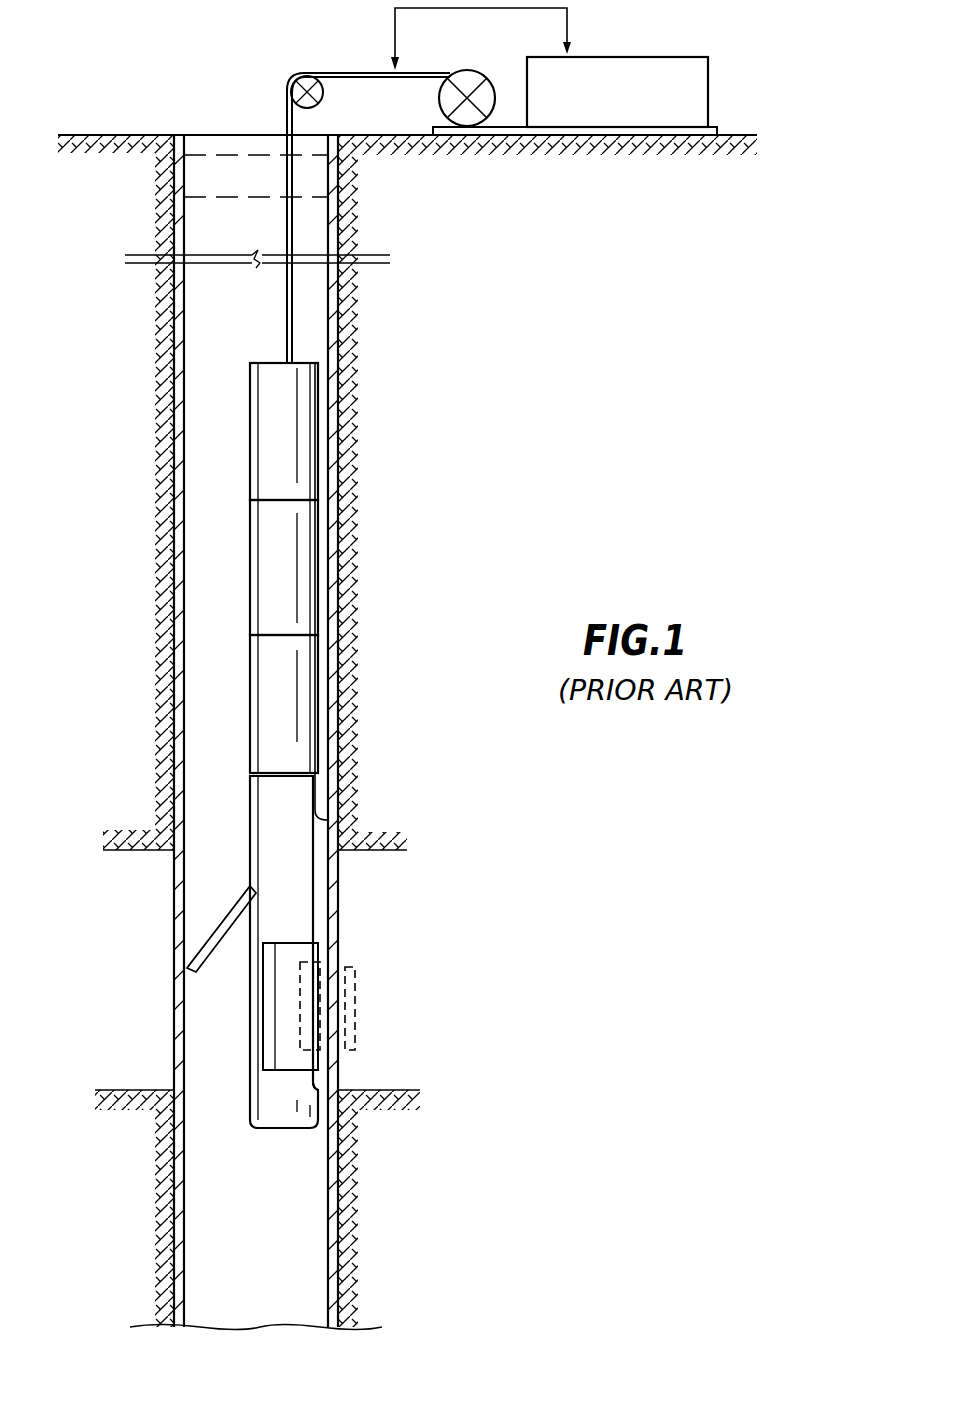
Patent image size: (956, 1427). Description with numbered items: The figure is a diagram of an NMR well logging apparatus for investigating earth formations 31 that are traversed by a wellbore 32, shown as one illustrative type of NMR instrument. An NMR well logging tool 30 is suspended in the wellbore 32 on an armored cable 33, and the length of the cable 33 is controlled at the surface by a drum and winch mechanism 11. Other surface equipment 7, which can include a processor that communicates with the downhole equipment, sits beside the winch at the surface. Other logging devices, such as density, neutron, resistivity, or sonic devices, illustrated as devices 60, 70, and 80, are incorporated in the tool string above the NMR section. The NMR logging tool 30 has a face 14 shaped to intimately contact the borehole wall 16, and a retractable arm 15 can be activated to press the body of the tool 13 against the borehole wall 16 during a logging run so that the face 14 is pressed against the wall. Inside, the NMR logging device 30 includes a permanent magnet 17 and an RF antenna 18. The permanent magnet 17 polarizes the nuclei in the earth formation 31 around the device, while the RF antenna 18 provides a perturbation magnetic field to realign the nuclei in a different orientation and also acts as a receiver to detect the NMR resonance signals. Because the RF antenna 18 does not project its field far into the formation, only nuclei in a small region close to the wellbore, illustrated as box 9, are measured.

The surface equipment 7 is at (672, 57).
The box 9 is at (350, 965).
The drum and winch mechanism 11 is at (468, 70).
The body of the tool 13 is at (250, 1070).
The face 14 is at (320, 1090).
The retractable arm 15 is at (222, 926).
The borehole wall 16 is at (165, 493).
The permanent magnet 17 is at (262, 1018).
The RF antenna 18 is at (318, 1055).
The NMR well logging tool 30 is at (236, 880).
The earth formations 31 is at (110, 135).
The wellbore 32 is at (205, 152).
The armored cable 33 is at (285, 100).
The logging device 60 is at (255, 710).
The logging device 70 is at (255, 565).
The logging device 80 is at (250, 407).